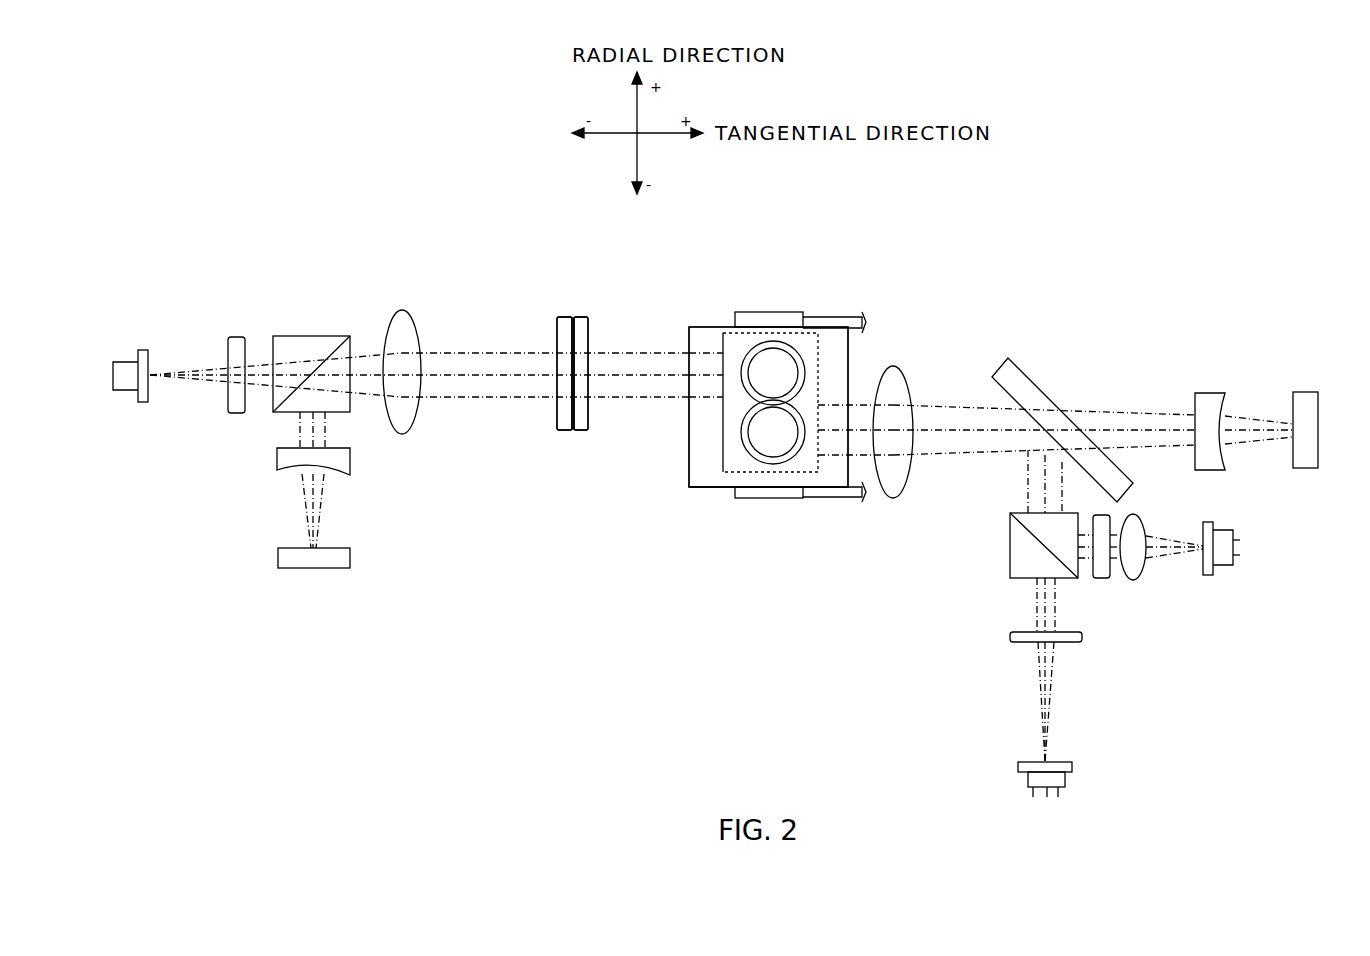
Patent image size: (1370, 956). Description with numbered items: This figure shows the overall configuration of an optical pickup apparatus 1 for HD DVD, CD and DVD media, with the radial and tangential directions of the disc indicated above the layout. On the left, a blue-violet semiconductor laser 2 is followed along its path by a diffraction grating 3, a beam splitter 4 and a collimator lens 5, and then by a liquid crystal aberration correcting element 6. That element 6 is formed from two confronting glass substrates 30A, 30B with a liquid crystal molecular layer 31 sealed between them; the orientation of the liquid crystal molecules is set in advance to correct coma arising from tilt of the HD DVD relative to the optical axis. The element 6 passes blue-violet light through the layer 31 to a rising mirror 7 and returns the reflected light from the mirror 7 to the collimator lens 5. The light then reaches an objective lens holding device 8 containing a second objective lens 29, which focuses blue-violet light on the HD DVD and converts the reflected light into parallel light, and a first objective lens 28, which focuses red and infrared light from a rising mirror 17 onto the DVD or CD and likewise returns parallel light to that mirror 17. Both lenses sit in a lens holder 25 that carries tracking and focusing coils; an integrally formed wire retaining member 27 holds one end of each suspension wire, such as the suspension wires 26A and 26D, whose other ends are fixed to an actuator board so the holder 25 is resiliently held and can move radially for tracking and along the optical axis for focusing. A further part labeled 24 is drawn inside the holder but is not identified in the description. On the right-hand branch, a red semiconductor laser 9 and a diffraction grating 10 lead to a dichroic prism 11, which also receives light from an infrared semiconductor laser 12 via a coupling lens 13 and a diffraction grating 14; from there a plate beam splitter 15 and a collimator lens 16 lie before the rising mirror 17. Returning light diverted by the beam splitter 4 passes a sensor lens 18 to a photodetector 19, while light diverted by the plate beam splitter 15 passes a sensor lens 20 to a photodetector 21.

The optical pickup apparatus 1 is at (1112, 258).
The blue-violet semiconductor laser 2 is at (141, 350).
The diffraction grating 3 is at (234, 337).
The beam splitter 4 is at (305, 336).
The collimator lens 5 is at (400, 310).
The liquid crystal aberration correcting element 6 is at (570, 317).
The rising mirror 7 is at (723, 356).
The objective lens holding device 8 is at (850, 347).
The red semiconductor laser 9 is at (1072, 767).
The diffraction grating 10 is at (1082, 637).
The dichroic prism 11 is at (1010, 548).
The infrared semiconductor laser 12 is at (1208, 575).
The coupling lens 13 is at (1140, 580).
The diffraction grating 14 is at (1103, 578).
The plate beam splitter 15 is at (1037, 373).
The collimator lens 16 is at (905, 378).
The rising mirror 17 is at (723, 460).
The sensor lens 18 is at (350, 455).
The photodetector 19 is at (350, 555).
The sensor lens 20 is at (1215, 393).
The photodetector 21 is at (1305, 392).
The holder portion 24 is at (723, 435).
The lens holder 25 is at (705, 488).
The suspension wire 26A is at (826, 317).
The suspension wire 26D is at (838, 497).
The wire retaining member 27 is at (760, 312).
The first objective lens 28 is at (805, 428).
The second objective lens 29 is at (805, 366).
The glass substrate 30A is at (562, 432).
The glass substrate 30B is at (584, 432).
The liquid crystal molecular layer 31 is at (573, 432).